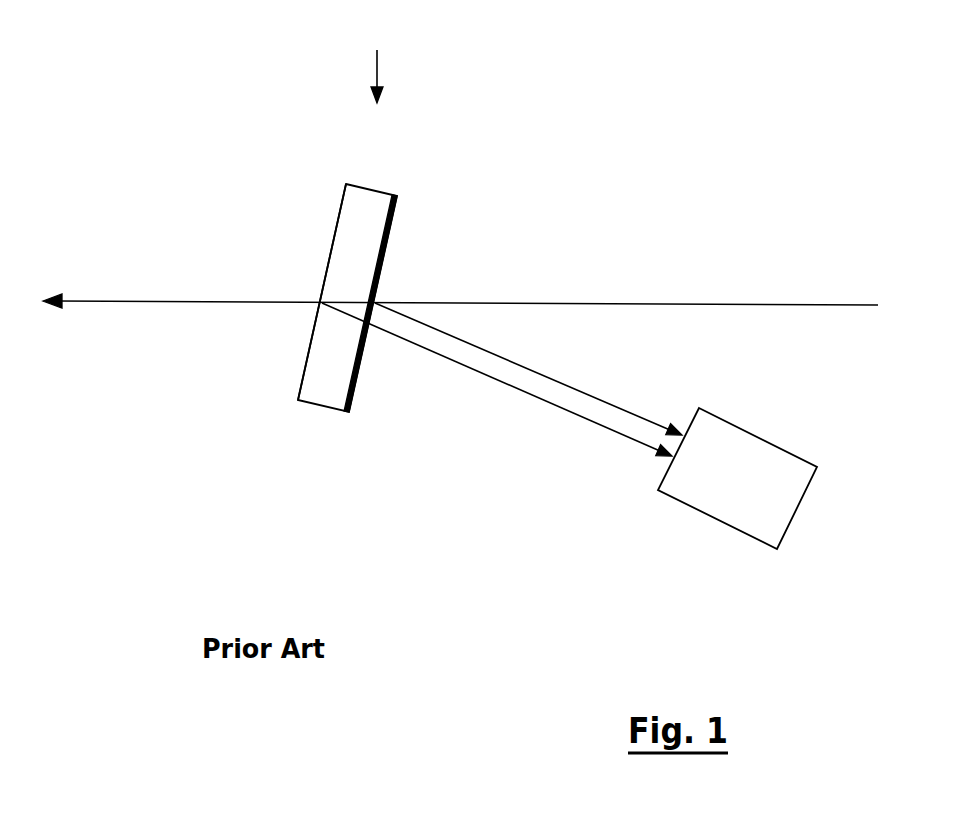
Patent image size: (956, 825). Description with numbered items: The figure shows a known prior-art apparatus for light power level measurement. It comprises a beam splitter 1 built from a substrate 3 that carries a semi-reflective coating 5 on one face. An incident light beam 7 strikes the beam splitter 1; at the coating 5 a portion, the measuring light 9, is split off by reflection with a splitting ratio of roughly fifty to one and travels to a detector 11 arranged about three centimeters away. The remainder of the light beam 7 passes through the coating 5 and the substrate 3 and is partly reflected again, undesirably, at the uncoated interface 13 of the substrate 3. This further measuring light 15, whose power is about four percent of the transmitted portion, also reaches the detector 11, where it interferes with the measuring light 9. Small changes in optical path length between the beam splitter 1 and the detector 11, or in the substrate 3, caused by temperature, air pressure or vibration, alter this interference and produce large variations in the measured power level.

The beam splitter 1 is at (373, 52).
The substrate 3 is at (375, 210).
The semi-reflective coating 5 is at (390, 248).
The incident light beam 7 is at (678, 305).
The measuring light 9 is at (532, 372).
The detector 11 is at (750, 470).
The uncoated interface 13 is at (332, 250).
The further measuring light 15 is at (530, 395).